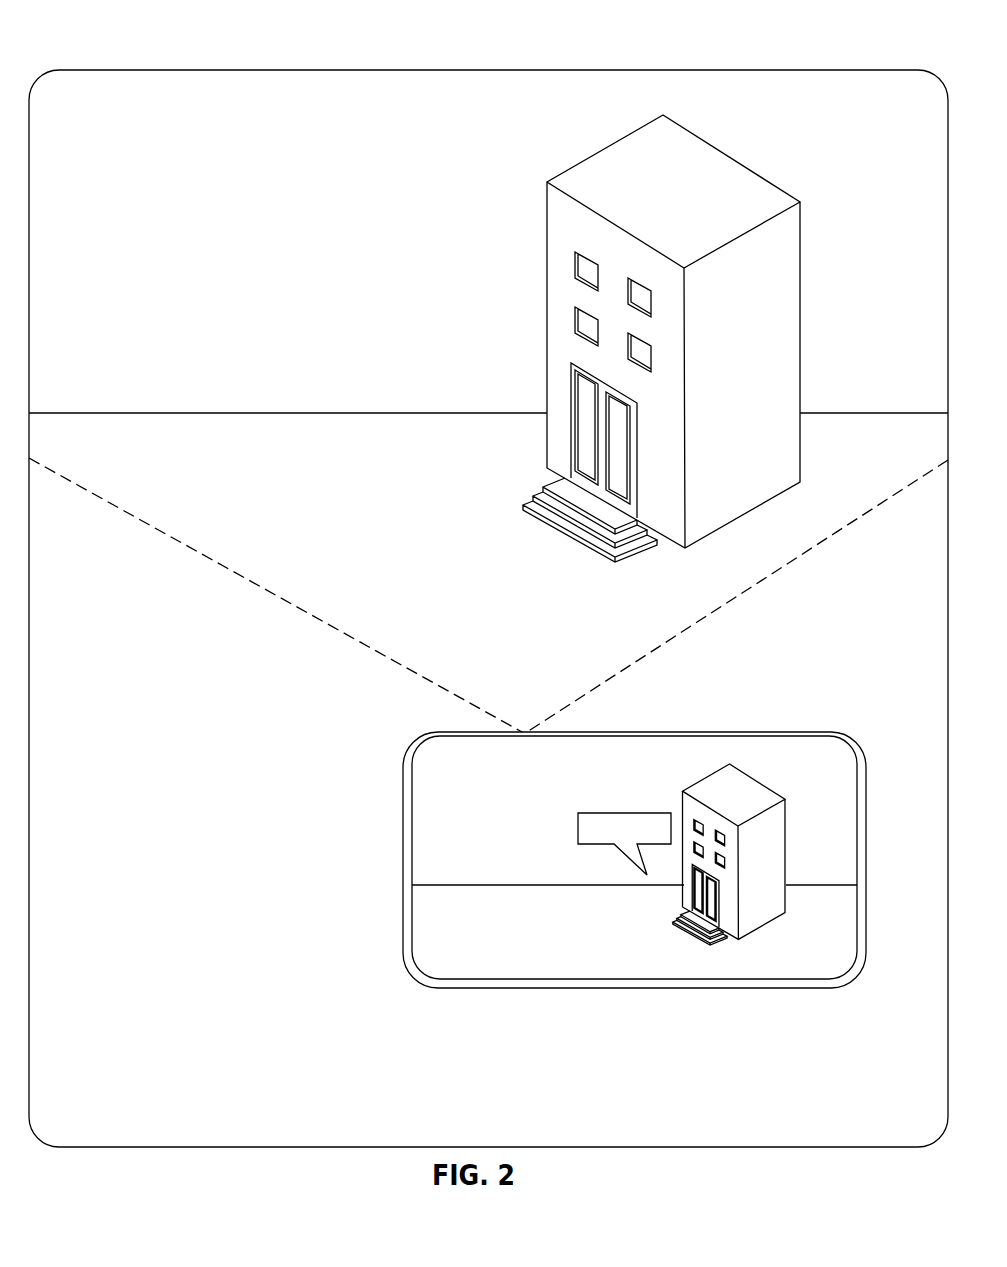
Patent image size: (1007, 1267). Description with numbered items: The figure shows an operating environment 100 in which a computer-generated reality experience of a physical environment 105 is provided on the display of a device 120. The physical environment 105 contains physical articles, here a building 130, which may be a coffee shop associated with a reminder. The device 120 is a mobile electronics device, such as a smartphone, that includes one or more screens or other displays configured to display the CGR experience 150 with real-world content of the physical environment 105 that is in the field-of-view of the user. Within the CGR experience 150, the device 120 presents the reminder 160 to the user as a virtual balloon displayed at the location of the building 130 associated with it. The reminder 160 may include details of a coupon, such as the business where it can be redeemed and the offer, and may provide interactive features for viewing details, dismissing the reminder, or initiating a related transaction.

The operating environment 100 is at (282, 58).
The physical environment 105 is at (488, 608).
The building 130 is at (598, 150).
The device 120 is at (403, 815).
The CGR experience 150 is at (634, 857).
The reminder 160 is at (622, 806).